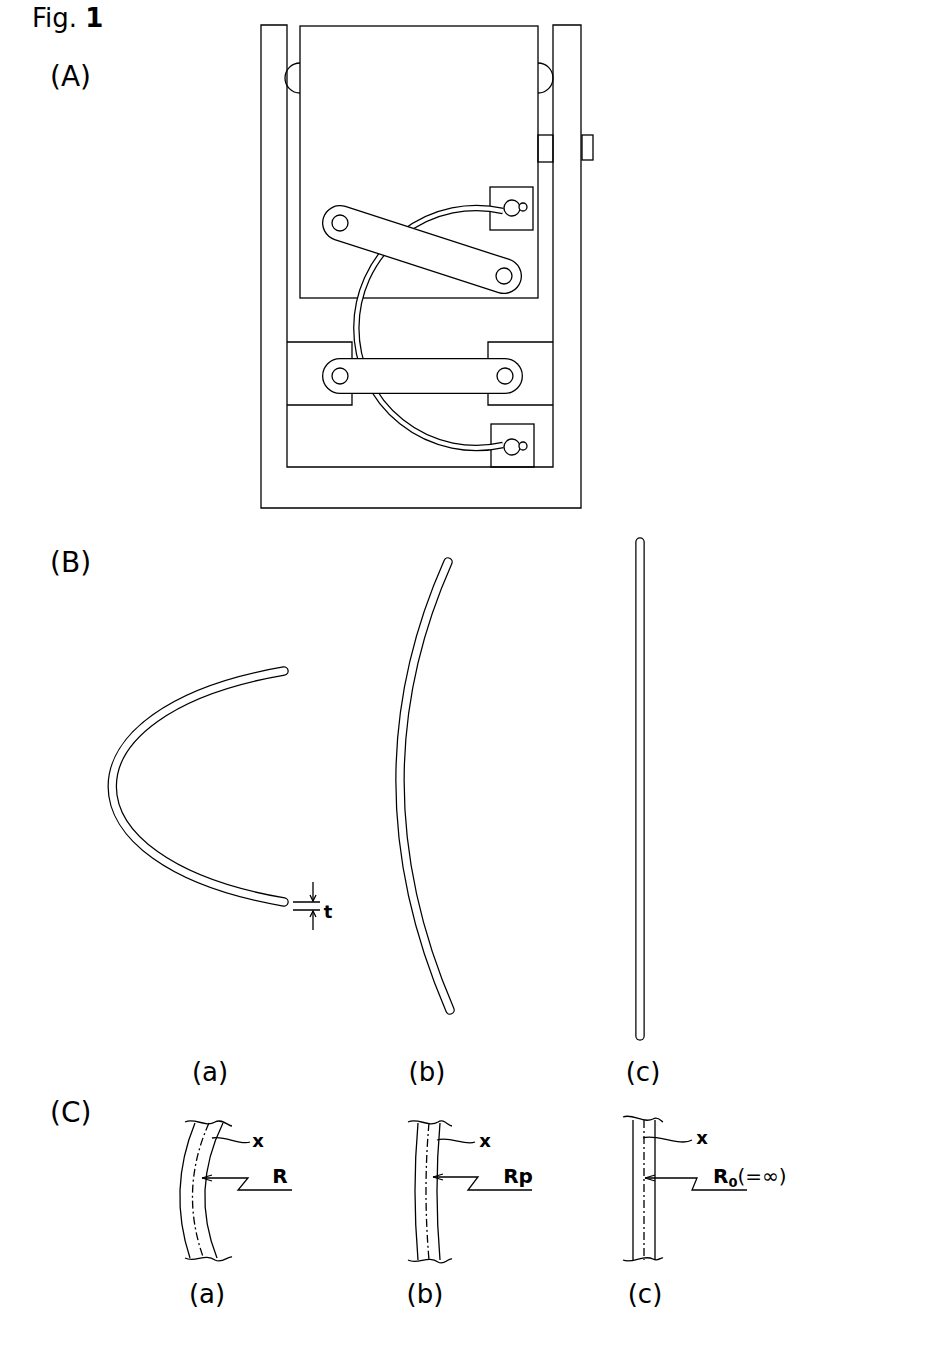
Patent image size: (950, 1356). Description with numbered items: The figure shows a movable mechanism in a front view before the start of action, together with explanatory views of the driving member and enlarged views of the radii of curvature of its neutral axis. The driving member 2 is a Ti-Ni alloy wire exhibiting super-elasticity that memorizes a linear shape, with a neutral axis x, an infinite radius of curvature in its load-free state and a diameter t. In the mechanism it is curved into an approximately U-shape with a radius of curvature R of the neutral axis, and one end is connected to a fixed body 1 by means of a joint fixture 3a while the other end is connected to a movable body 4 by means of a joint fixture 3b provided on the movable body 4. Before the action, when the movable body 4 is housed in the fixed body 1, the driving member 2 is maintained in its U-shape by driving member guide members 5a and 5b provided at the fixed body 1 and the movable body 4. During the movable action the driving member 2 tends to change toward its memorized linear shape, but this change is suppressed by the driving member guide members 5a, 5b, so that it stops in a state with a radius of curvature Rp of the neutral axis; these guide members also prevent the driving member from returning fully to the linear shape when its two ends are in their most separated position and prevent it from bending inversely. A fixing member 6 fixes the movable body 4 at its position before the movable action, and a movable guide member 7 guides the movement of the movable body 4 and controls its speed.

The fixed body 1 is at (571, 417).
The driving member 2 is at (350, 327).
The joint fixture 3a is at (524, 440).
The joint fixture 3b is at (521, 218).
The movable body 4 is at (350, 122).
The driving member guide member 5a is at (405, 367).
The driving member guide member 5b is at (374, 224).
The fixing member 6 is at (596, 147).
The movable guide member 7 is at (296, 77).